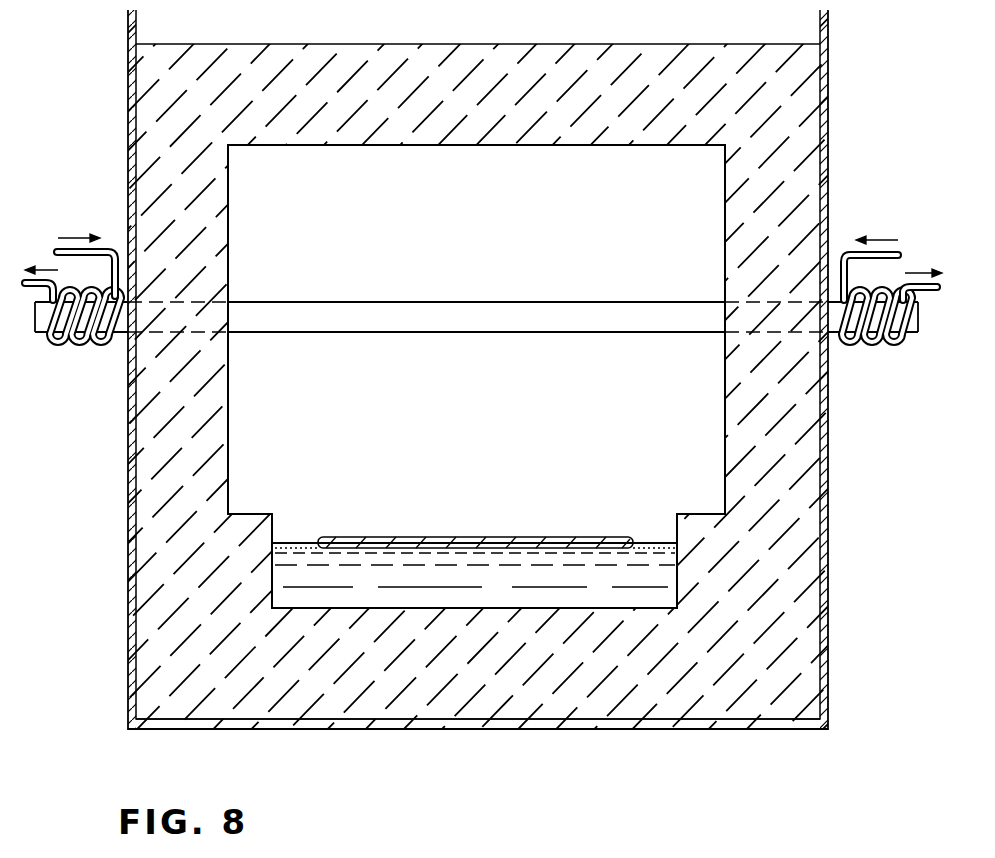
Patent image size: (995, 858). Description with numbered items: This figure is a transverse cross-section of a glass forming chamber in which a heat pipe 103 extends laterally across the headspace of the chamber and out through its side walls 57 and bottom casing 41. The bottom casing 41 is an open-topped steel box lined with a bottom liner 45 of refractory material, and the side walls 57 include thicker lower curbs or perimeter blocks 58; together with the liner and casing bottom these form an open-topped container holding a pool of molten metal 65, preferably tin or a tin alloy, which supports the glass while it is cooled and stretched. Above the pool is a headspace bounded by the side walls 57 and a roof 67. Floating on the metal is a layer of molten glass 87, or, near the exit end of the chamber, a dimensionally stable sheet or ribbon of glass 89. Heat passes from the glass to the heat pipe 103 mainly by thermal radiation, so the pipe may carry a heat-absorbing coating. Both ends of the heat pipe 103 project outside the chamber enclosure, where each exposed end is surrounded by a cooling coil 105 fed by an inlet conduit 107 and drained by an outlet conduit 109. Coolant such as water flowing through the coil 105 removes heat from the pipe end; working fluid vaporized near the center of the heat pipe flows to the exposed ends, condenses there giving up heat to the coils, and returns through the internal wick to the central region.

The bottom casing 41 is at (821, 162).
The bottom liner 45 is at (400, 708).
The side walls 57 is at (805, 415).
The perimeter blocks 58 is at (700, 516).
The pool of molten metal 65 is at (290, 543).
The roof 67 is at (612, 147).
The layer of molten glass 87 is at (468, 537).
The sheet or ribbon of glass 89 is at (475, 542).
The heat pipe 103 is at (448, 301).
The cooling coil 105 is at (872, 348).
The inlet conduit 107 is at (846, 250).
The outlet conduit 109 is at (910, 290).